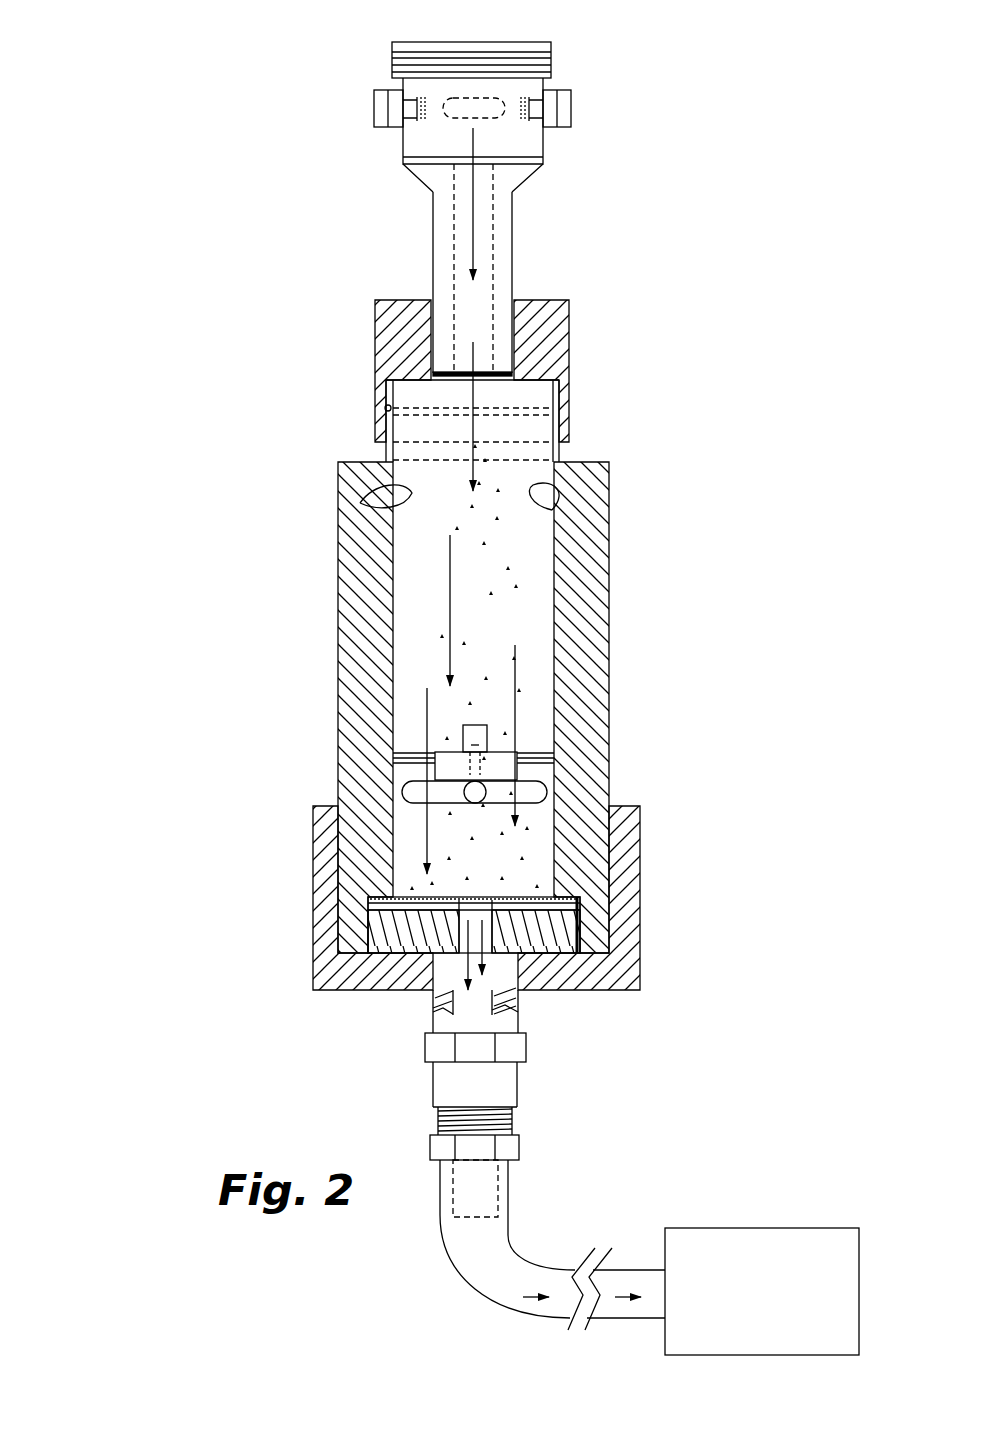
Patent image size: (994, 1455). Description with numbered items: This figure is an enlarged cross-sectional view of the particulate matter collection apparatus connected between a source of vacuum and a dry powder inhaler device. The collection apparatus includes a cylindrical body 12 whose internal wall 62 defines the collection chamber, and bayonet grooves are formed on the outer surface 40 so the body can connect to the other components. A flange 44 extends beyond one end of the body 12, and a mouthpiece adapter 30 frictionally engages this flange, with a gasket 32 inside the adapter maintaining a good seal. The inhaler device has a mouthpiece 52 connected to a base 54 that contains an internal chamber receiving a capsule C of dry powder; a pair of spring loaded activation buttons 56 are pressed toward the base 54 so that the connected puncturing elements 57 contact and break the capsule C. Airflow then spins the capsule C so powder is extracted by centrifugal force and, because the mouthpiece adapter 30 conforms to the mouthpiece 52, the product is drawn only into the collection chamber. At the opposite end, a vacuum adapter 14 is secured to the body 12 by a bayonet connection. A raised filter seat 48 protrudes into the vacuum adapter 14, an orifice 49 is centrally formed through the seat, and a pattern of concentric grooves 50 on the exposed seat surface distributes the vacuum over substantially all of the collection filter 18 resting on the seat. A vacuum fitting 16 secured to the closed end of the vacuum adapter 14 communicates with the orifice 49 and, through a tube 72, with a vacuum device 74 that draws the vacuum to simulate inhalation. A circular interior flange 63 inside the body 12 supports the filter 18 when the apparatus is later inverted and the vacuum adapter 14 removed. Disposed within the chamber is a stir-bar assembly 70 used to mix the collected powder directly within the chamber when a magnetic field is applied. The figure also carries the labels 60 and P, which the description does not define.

The body 12 is at (457, 698).
The vacuum adapter 14 is at (470, 925).
The vacuum fitting 16 is at (538, 1073).
The collection filter 18 is at (493, 895).
The mouthpiece adapter 30 is at (569, 330).
The gasket 32 is at (527, 408).
The outer surface 40 is at (338, 632).
The flange 44 is at (408, 392).
The raised filter seat 48 is at (573, 920).
The orifice 49 is at (470, 925).
The concentric grooves 50 is at (558, 895).
The mouthpiece 52 is at (512, 262).
The base 54 is at (414, 148).
The activation buttons 56 is at (374, 104).
The puncturing elements 57 is at (527, 95).
The inlet passage 60 is at (490, 223).
The internal wall 62 is at (360, 503).
The circular interior flange 63 is at (371, 893).
The stir-bar assembly 70 is at (522, 735).
The tube 72 is at (500, 1253).
The vacuum device 74 is at (753, 1250).
The capsule C is at (495, 118).
The particles P is at (432, 557).